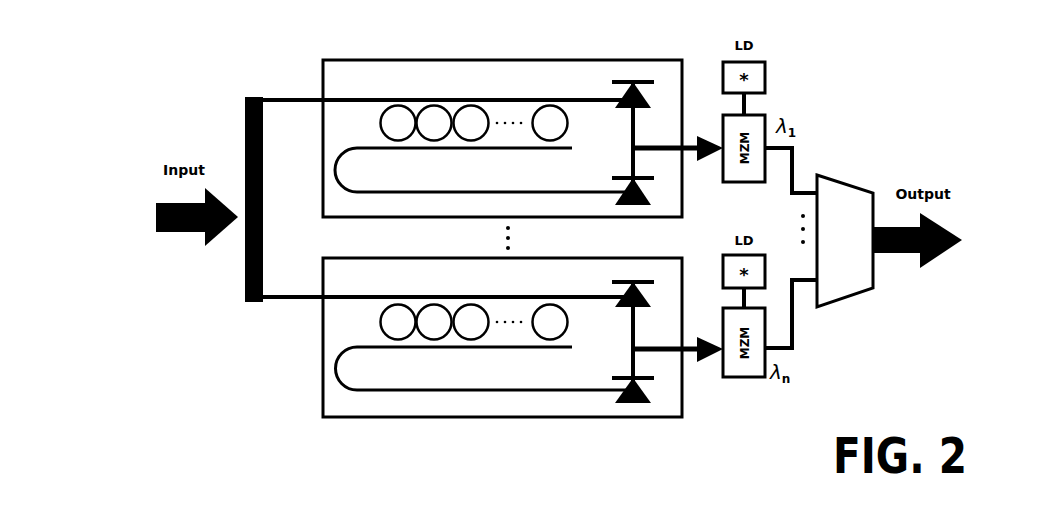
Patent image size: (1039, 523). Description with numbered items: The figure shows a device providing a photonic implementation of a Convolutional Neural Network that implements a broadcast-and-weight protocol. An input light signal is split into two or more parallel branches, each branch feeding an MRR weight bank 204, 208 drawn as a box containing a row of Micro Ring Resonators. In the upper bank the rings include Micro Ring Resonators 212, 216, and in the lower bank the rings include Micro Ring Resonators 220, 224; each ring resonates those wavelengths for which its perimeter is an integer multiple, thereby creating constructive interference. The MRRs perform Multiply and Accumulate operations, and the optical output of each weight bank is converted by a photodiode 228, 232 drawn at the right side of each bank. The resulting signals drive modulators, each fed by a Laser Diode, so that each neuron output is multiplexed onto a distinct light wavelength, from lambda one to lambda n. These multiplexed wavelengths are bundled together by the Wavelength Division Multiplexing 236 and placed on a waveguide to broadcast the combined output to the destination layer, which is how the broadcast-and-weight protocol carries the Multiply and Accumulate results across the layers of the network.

The first MRR weight bank 204 is at (643, 60).
The second MRR weight bank 208 is at (651, 258).
The Micro Ring Resonator 212 is at (488, 118).
The Micro Ring Resonator 216 is at (561, 110).
The Micro Ring Resonator 220 is at (473, 339).
The Micro Ring Resonator 224 is at (552, 339).
The photodiode 228 is at (640, 107).
The photodiode 232 is at (640, 307).
The Wavelength Division Multiplexing 236 is at (838, 181).